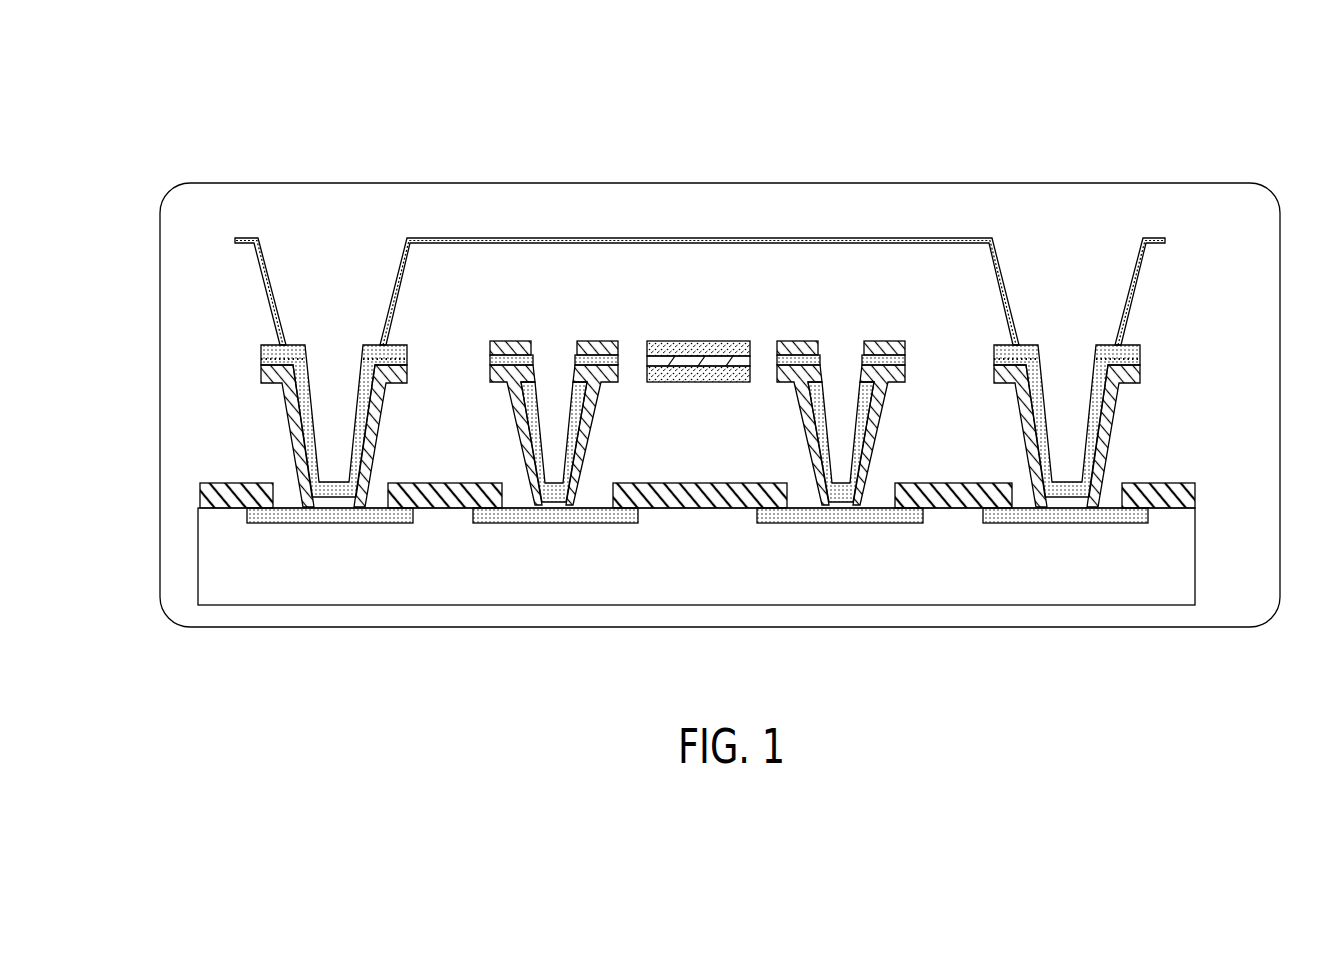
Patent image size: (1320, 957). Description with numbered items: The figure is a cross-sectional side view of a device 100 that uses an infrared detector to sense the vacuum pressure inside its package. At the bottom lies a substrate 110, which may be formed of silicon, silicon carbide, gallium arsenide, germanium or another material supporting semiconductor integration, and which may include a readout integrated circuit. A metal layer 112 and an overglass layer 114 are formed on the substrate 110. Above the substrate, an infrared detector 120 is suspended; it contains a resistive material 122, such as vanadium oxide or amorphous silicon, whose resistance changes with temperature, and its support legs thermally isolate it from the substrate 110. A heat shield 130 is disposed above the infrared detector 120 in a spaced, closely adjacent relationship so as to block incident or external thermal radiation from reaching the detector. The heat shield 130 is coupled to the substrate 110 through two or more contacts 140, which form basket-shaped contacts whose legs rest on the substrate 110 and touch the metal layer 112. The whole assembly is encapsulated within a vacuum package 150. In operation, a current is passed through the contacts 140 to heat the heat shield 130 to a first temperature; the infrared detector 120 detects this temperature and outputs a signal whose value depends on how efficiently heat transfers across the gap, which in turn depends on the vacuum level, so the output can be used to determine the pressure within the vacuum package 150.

The device 100 is at (174, 110).
The substrate 110 is at (1073, 595).
The metal layer 112 is at (550, 513).
The overglass layer 114 is at (203, 498).
The infrared detector 120 is at (706, 317).
The resistive material 122 is at (695, 352).
The heat shield 130 is at (480, 238).
The contacts 140 is at (305, 417).
The vacuum package 150 is at (963, 182).